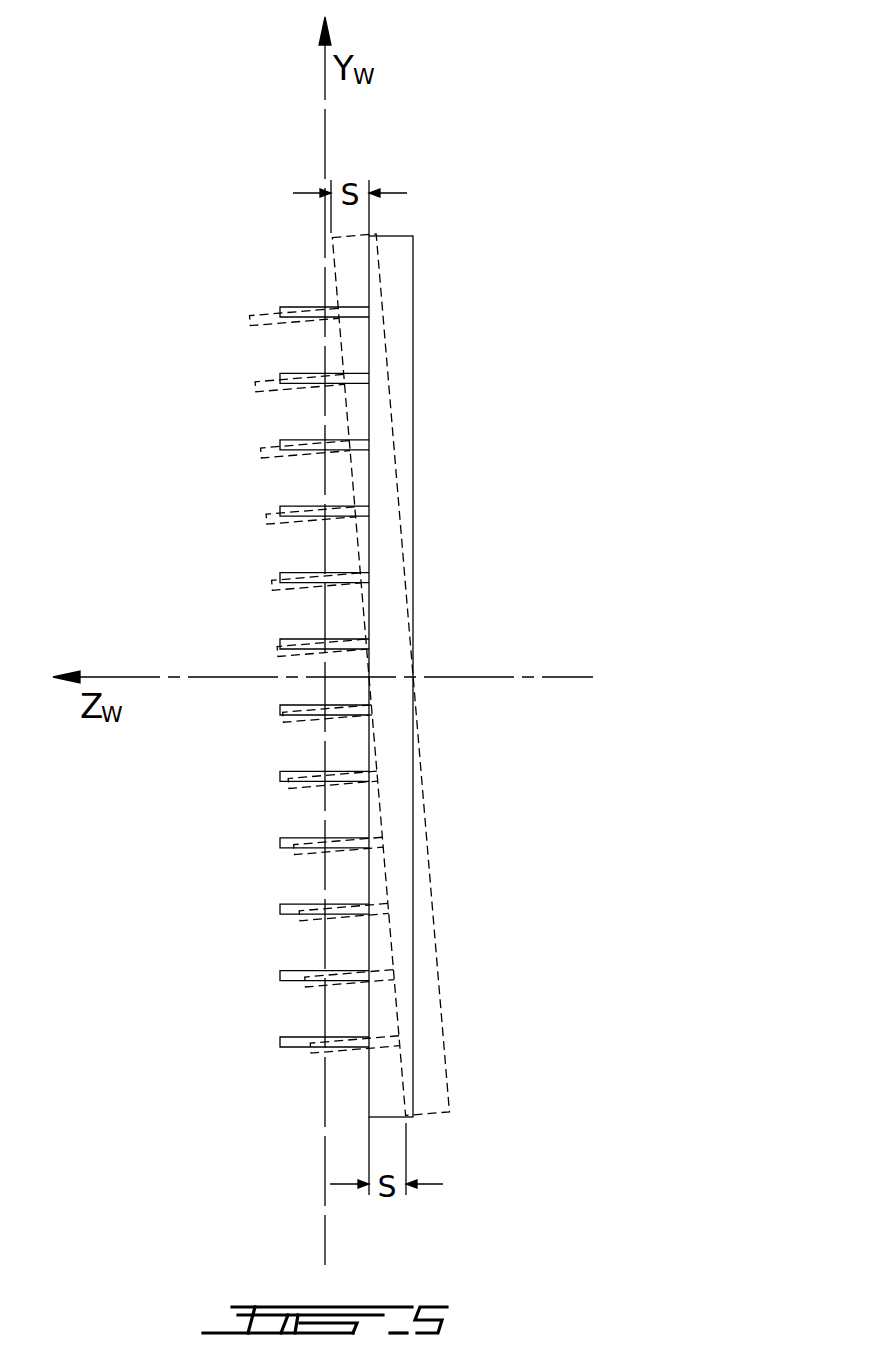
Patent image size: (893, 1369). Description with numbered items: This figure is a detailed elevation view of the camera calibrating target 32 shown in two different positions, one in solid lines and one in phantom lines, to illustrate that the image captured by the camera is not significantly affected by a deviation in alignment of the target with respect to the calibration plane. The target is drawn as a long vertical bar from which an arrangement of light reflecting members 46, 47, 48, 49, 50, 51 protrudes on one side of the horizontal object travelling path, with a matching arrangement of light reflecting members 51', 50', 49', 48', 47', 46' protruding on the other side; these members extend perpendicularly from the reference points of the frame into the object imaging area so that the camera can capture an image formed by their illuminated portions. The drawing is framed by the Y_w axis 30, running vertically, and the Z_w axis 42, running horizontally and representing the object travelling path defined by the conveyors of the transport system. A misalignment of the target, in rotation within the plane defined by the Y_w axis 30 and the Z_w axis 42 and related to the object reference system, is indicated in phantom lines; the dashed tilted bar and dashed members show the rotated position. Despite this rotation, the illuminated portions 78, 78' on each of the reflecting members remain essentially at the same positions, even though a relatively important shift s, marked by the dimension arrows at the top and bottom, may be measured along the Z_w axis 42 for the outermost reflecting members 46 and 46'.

The Y axis 30 is at (325, 135).
The camera calibrating target 32 is at (436, 232).
The axis 42 is at (457, 677).
The light reflecting member 46 is at (287, 278).
The light reflecting member 47 is at (281, 361).
The light reflecting member 48 is at (281, 428).
The light reflecting member 49 is at (281, 494).
The light reflecting member 50 is at (281, 561).
The light reflecting member 51 is at (281, 627).
The light reflecting member 51' is at (267, 720).
The light reflecting member 50' is at (267, 786).
The light reflecting member 49' is at (267, 853).
The light reflecting member 48' is at (267, 919).
The light reflecting member 47' is at (267, 986).
The light reflecting member 46' is at (267, 1052).
The illuminated portion 78 is at (366, 675).
The illuminated portion 78' is at (326, 900).